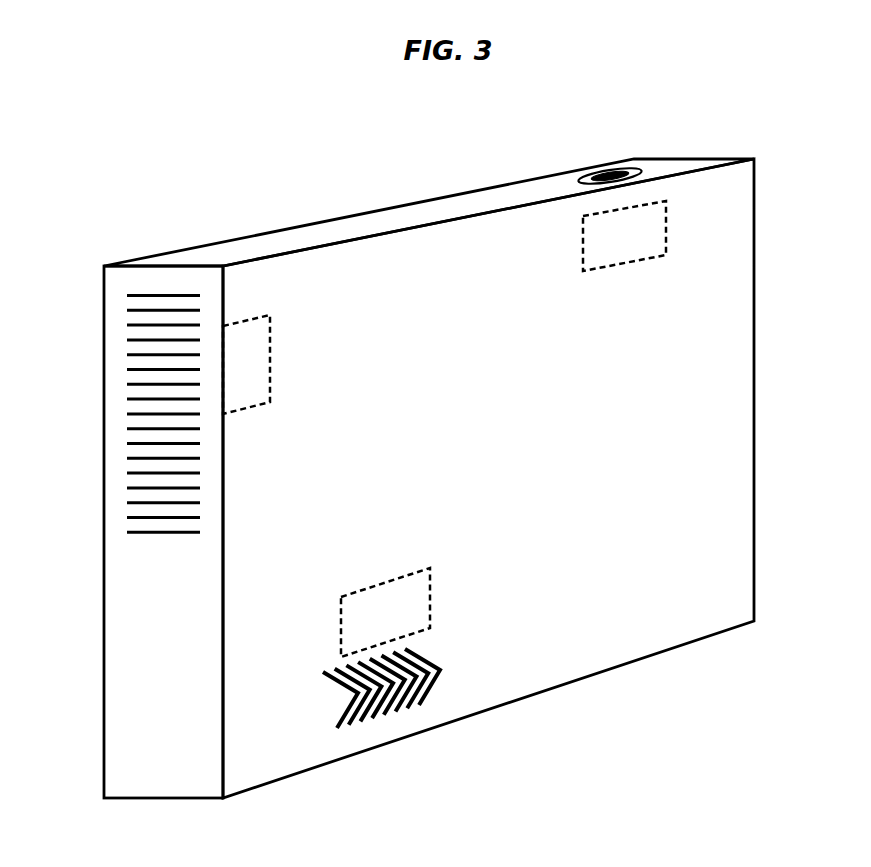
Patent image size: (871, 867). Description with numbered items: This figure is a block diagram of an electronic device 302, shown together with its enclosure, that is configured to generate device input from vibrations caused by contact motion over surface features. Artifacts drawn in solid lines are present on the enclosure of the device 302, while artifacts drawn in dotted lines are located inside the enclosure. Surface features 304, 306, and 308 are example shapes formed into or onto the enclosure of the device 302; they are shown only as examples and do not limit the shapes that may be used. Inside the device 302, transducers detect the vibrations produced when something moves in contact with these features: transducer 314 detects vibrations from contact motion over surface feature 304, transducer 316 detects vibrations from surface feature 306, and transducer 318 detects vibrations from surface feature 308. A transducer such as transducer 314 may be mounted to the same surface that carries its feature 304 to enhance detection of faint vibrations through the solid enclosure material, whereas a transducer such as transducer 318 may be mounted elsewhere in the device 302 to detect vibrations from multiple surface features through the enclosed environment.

The device 302 is at (755, 358).
The surface feature 304 is at (142, 383).
The surface feature 306 is at (432, 692).
The surface feature 308 is at (608, 175).
The transducer 314 is at (261, 376).
The transducer 316 is at (403, 626).
The transducer 318 is at (640, 244).